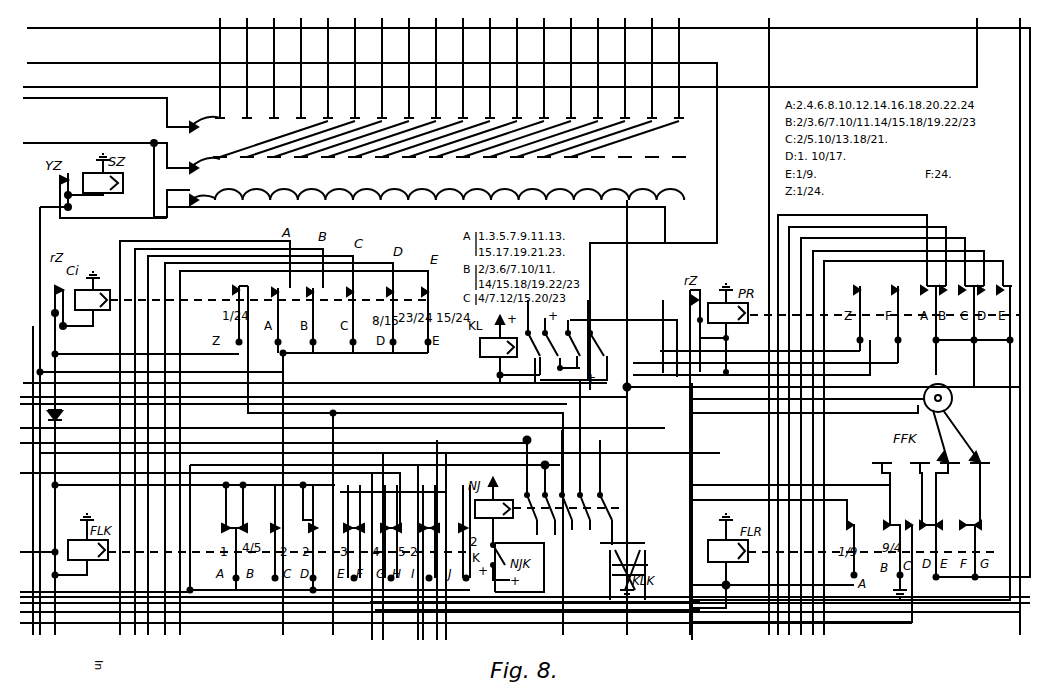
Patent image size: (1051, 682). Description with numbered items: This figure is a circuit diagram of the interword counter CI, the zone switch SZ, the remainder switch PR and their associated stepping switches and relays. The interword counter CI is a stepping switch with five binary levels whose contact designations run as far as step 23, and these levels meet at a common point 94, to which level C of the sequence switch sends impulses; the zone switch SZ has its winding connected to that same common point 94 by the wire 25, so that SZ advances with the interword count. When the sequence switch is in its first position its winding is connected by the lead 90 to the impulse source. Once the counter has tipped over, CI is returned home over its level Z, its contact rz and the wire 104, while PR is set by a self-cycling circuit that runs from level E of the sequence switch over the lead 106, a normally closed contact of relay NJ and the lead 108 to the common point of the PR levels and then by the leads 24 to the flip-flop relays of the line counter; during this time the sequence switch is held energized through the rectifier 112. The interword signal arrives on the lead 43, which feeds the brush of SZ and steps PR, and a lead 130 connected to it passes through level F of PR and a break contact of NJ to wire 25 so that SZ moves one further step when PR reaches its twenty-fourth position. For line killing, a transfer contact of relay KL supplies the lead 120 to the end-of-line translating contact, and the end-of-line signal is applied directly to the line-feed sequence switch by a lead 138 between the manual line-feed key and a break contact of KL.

The interword counter level contact designation 23 is at (168, 286).
The leads to flip-flop relays 24 is at (866, 228).
The wire to zone switch 25 is at (40, 238).
The interword signal lead 43 is at (426, 205).
The impulse source lead 90 is at (204, 590).
The common point of interword counter levels 94 is at (333, 357).
The home-return wire 104 is at (350, 500).
The self-cycling lead for PR 106 is at (552, 455).
The lead to common point of PR levels 108 is at (955, 603).
The rectifier 112 is at (62, 415).
The end-of-line lead 120 is at (717, 190).
The zone-switch stepping lead 130 is at (650, 355).
The kill-line lead 138 is at (596, 458).